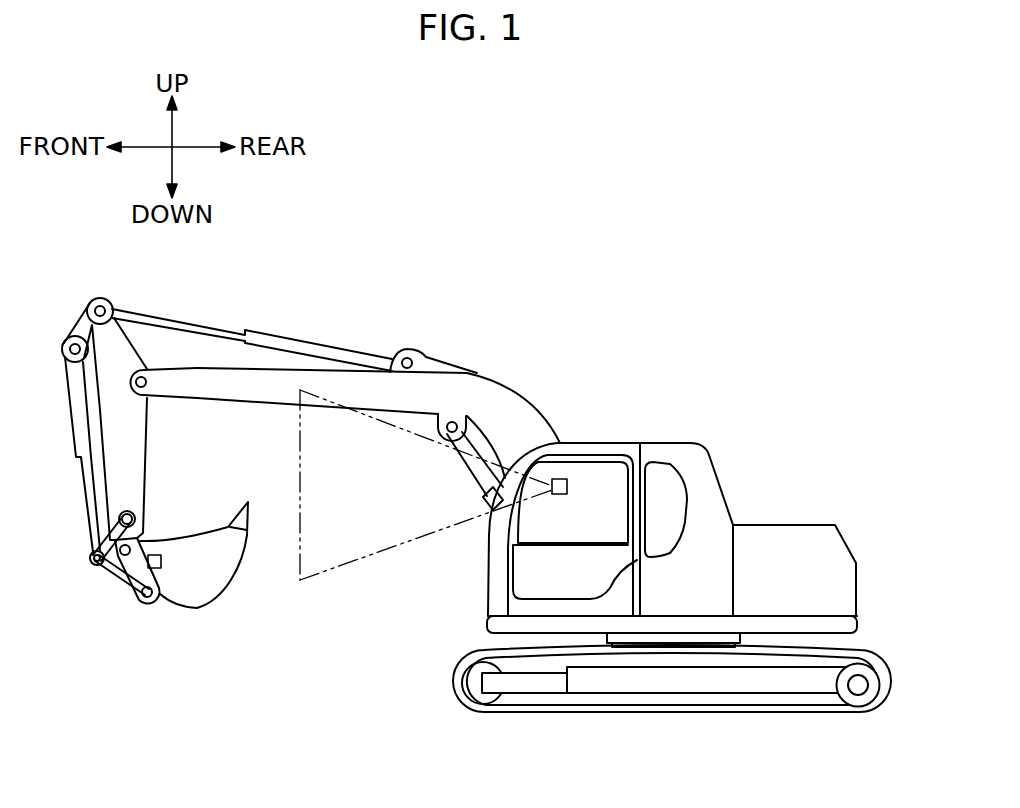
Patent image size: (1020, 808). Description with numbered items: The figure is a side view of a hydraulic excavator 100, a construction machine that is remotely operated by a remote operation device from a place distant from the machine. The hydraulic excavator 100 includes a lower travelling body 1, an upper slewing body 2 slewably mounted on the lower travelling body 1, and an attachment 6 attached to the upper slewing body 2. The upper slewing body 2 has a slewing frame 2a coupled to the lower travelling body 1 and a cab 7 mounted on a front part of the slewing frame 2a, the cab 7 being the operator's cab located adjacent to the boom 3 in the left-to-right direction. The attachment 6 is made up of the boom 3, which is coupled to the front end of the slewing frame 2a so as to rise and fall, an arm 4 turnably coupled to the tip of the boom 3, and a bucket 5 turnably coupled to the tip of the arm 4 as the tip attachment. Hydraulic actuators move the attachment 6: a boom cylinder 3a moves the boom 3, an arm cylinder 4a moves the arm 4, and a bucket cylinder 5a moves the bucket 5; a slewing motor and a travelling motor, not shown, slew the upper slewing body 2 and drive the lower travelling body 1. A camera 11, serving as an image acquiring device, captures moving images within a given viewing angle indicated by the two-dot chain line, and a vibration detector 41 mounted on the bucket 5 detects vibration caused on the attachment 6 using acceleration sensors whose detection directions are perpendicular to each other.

The hydraulic excavator 100 is at (475, 494).
The lower travelling body 1 is at (673, 714).
The upper slewing body 2 is at (710, 513).
The slewing frame 2a is at (860, 622).
The boom 3 is at (503, 393).
The boom cylinder 3a is at (474, 475).
The arm 4 is at (118, 418).
The arm cylinder 4a is at (197, 328).
The bucket 5 is at (279, 581).
The bucket cylinder 5a is at (88, 500).
The attachment 6 is at (288, 445).
The cab 7 is at (598, 498).
The camera 11 is at (560, 478).
The vibration detector 41 is at (162, 560).